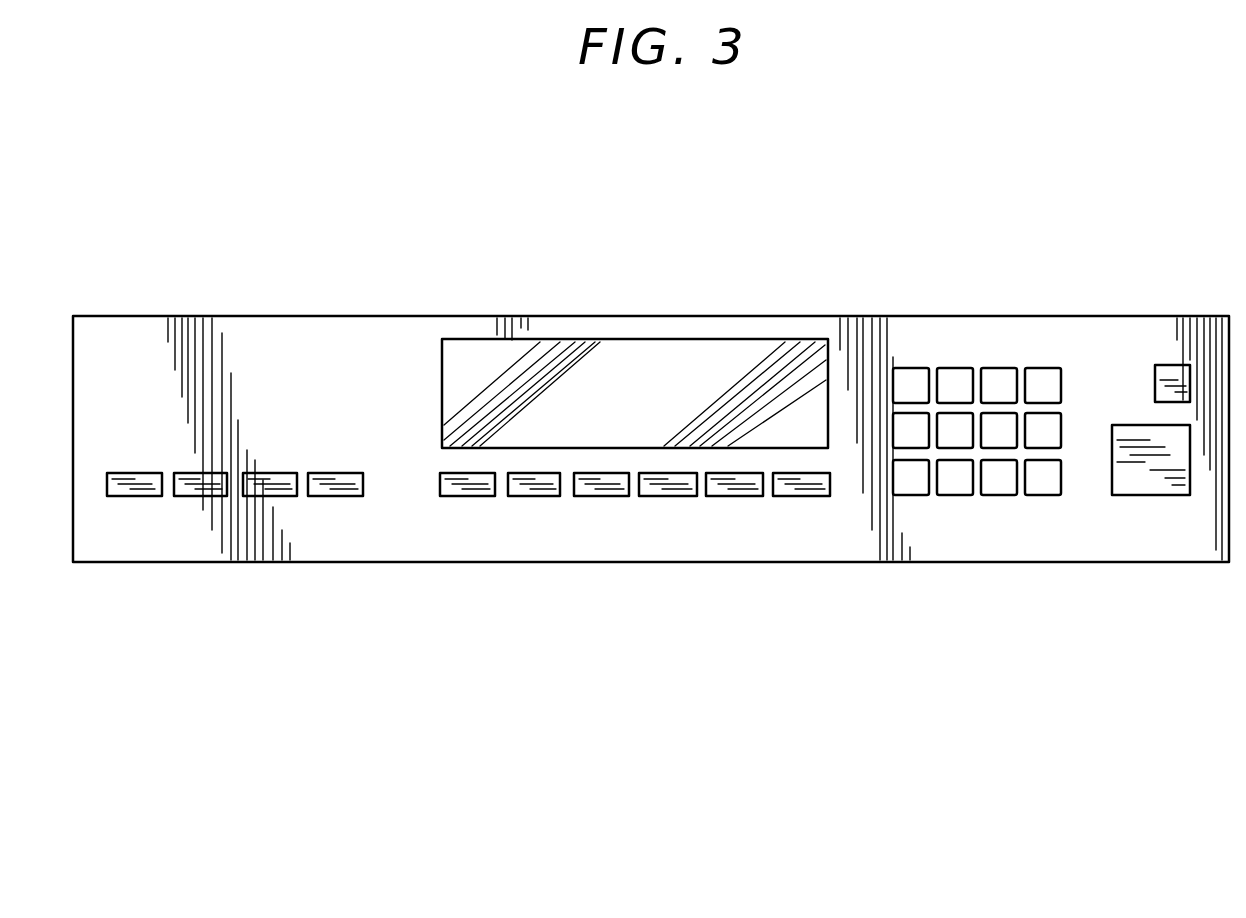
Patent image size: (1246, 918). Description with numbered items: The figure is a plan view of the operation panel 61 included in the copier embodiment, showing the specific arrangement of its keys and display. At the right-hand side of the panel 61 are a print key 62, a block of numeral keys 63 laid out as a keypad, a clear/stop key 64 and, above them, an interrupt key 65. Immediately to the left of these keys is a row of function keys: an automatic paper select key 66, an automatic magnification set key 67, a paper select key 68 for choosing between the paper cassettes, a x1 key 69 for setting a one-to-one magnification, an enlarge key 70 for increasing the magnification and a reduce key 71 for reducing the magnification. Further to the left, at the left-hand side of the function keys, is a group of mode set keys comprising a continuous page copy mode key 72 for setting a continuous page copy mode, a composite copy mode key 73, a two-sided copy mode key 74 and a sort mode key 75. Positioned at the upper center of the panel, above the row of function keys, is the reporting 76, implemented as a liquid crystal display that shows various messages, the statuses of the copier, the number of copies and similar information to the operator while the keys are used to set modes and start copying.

The operation panel 61 is at (306, 298).
The print key 62 is at (1145, 497).
The numeral keys 63 is at (963, 496).
The clear/stop (C/S) key 64 is at (1042, 497).
The interrupt key 65 is at (1163, 363).
The automatic paper select key 66 is at (802, 497).
The automatic magnification set key 67 is at (733, 497).
The paper select key 68 is at (668, 497).
The x1 key 69 is at (610, 497).
The enlarge key 70 is at (530, 497).
The reduce key 71 is at (462, 497).
The continuous page copy mode key 72 is at (333, 497).
The composite copy mode key 73 is at (275, 497).
The two-sided copy mode key 74 is at (188, 497).
The sort mode key 75 is at (137, 497).
The reporting (display) 76 is at (612, 338).